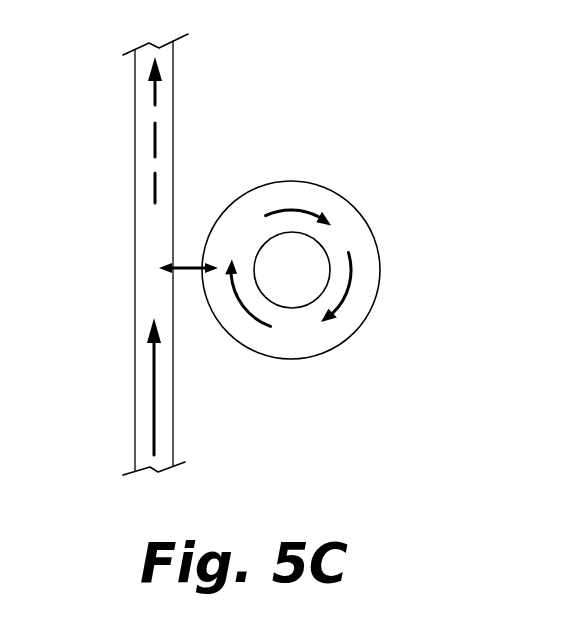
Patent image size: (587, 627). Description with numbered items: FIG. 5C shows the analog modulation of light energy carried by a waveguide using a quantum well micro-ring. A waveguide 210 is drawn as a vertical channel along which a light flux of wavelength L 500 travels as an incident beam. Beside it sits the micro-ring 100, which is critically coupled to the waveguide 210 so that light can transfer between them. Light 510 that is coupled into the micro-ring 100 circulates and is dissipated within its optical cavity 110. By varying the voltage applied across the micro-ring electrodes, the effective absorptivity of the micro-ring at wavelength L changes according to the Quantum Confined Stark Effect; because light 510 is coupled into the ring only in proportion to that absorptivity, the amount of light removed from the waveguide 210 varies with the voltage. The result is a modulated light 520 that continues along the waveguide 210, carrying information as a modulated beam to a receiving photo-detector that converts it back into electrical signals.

The micro-ring 100 is at (331, 230).
The optical cavity 110 is at (374, 307).
The waveguide 210 is at (135, 432).
The light flux of wavelength L 500 is at (156, 400).
The light in the optical cavity 510 is at (354, 263).
The modulated light 520 is at (155, 134).